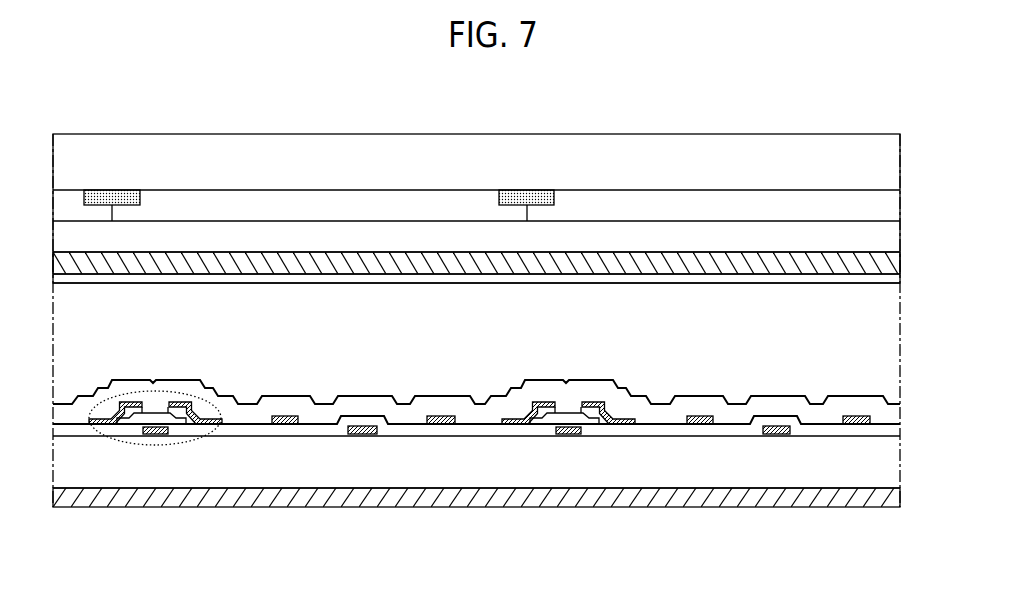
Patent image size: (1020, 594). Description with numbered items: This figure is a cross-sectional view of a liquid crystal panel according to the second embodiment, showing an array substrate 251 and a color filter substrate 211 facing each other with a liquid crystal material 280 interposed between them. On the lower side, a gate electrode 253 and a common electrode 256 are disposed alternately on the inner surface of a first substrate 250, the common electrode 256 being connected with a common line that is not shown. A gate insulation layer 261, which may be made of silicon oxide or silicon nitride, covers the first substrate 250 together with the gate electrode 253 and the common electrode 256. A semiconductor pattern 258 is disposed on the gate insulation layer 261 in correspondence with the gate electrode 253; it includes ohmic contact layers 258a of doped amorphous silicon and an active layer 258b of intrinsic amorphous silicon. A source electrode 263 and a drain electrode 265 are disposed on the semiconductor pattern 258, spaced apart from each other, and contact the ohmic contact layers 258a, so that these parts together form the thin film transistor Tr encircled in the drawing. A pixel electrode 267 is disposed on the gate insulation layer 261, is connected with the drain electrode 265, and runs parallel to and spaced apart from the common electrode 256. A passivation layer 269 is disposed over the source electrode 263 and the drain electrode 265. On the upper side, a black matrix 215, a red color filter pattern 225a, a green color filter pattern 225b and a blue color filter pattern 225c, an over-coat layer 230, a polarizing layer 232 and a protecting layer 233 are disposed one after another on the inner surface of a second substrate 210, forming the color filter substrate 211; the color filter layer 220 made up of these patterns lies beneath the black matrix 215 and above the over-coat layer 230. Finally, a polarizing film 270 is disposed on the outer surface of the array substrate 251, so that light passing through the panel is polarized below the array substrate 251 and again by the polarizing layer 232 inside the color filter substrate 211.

The second substrate 210 is at (694, 169).
The color filter substrate 211 is at (900, 134).
The black matrix 215 is at (118, 191).
The color filter layer 220 is at (450, 190).
The red color filter pattern 225a is at (390, 200).
The green color filter pattern 225b is at (779, 197).
The blue color filter pattern 225c is at (68, 193).
The over-coat layer 230 is at (245, 232).
The polarizing layer 232 is at (296, 253).
The protecting layer 233 is at (188, 275).
The liquid crystal material 280 is at (890, 321).
The first substrate 250 is at (864, 469).
The array substrate 251 is at (900, 404).
The gate electrode 253 is at (155, 437).
The common electrode 256 is at (362, 424).
The semiconductor pattern 258 is at (157, 356).
The ohmic contact layers 258a is at (119, 410).
The active layer 258b is at (155, 412).
The gate insulation layer 261 is at (318, 432).
The source electrode 263 is at (116, 405).
The drain electrode 265 is at (196, 404).
The pixel electrode 267 is at (285, 413).
The passivation layer 269 is at (402, 413).
The polarizing film 270 is at (737, 498).
The thin film transistor Tr is at (188, 446).